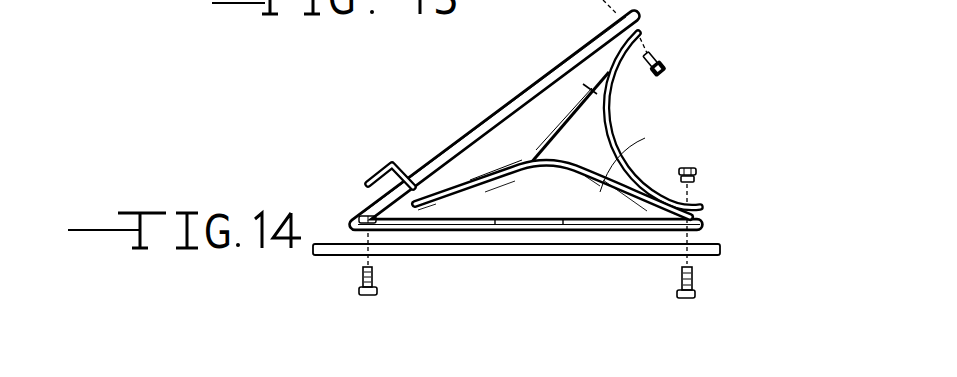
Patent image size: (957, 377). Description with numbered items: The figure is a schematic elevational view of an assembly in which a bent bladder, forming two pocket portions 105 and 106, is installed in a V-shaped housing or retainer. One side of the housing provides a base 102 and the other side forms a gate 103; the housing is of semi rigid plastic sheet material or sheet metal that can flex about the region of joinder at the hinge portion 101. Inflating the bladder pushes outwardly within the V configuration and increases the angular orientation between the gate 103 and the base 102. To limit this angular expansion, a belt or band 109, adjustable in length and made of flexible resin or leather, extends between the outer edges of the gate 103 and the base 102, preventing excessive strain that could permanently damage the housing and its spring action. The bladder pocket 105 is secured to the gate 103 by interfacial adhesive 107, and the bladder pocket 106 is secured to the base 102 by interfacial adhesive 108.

The hinge portion 101 is at (345, 231).
The base 102 is at (581, 226).
The gate 103 is at (541, 73).
The pocket portion 105 is at (600, 96).
The pocket portion 106 is at (640, 141).
The interfacial adhesive 107 is at (480, 116).
The interfacial adhesive 108 is at (538, 233).
The belt or band 109 is at (624, 124).